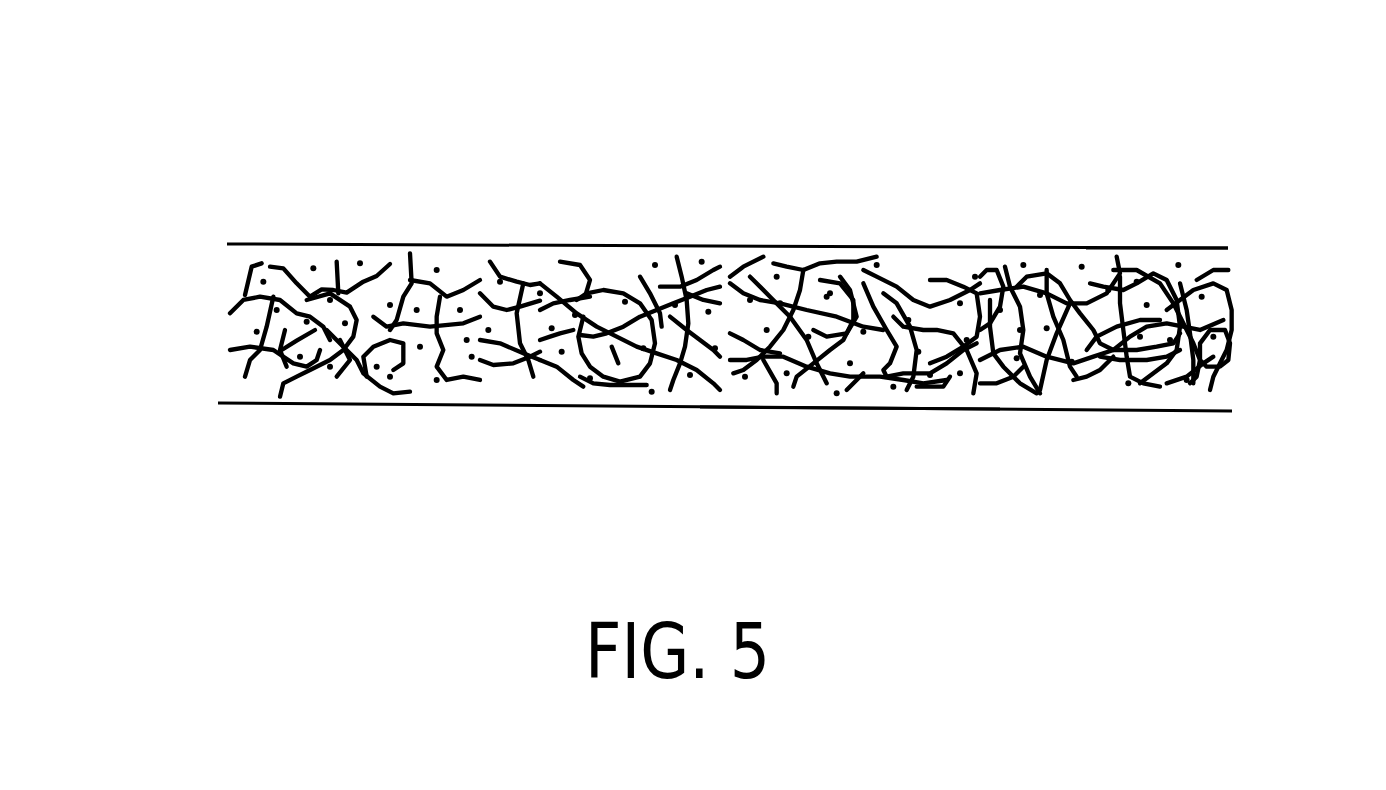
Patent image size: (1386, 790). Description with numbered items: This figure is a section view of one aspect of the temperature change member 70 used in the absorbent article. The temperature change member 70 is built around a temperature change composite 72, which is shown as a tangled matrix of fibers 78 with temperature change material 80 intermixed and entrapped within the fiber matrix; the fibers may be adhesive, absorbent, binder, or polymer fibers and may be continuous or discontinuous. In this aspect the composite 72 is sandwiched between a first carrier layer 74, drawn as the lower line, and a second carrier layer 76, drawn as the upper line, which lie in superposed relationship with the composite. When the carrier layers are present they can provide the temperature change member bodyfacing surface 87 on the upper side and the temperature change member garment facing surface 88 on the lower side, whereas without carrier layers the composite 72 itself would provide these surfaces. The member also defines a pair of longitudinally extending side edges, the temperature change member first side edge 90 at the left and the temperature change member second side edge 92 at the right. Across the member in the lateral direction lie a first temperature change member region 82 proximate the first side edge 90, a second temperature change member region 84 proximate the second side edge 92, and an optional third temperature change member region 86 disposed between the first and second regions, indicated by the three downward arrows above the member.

The temperature change member 70 is at (727, 291).
The temperature change composite 72 is at (242, 310).
The first carrier layer 74 is at (1104, 411).
The second carrier layer 76 is at (1003, 247).
The matrix of fibers 78 is at (895, 290).
The temperature change material 80 is at (643, 283).
The first temperature change member region 82 is at (305, 165).
The second temperature change member region 84 is at (1184, 166).
The third temperature change member region 86 is at (690, 170).
The temperature change member bodyfacing surface 87 is at (1086, 248).
The temperature change member garment facing surface 88 is at (861, 409).
The temperature change member first side edge 90 is at (244, 300).
The temperature change member second side edge 92 is at (1237, 325).